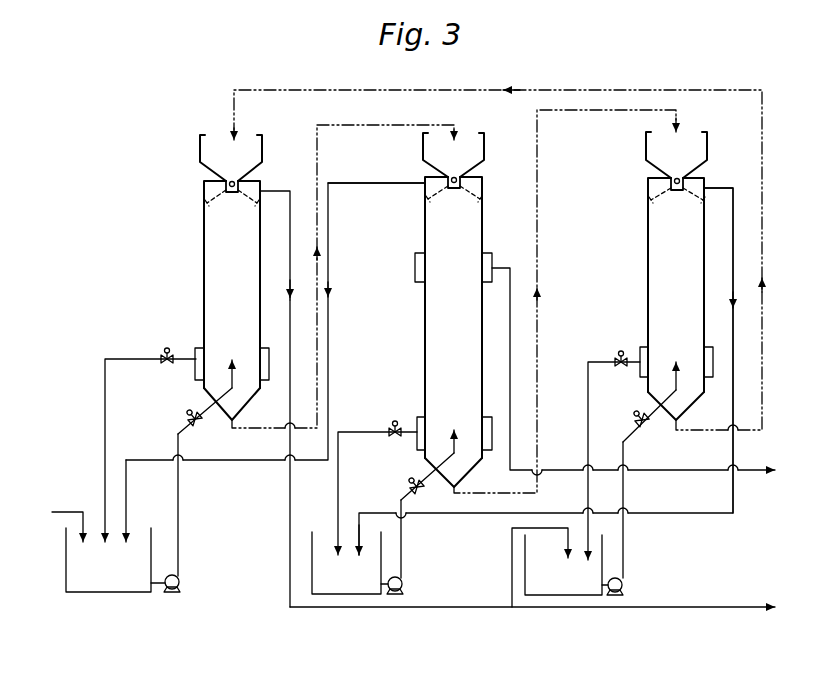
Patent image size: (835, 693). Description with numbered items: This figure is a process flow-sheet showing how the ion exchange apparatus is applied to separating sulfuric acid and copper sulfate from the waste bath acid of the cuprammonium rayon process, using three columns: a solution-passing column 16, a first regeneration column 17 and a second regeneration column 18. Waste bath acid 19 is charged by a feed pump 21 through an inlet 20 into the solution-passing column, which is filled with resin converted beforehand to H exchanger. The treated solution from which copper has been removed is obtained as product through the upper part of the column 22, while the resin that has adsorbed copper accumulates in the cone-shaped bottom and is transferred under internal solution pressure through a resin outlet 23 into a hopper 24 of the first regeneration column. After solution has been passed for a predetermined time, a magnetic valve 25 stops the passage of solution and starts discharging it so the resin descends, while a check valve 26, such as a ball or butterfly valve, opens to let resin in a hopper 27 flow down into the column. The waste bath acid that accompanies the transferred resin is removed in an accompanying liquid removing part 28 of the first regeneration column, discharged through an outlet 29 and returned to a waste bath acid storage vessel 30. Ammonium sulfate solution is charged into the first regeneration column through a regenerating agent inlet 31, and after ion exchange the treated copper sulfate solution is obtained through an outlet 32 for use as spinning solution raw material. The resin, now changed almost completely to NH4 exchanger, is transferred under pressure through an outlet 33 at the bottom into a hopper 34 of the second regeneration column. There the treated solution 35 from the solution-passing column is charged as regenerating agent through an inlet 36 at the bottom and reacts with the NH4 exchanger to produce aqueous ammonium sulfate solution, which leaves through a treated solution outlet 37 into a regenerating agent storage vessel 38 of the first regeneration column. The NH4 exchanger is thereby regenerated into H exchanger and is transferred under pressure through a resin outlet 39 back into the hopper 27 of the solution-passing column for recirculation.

The solution-passing column 16 is at (204, 264).
The first regeneration column 17 is at (425, 297).
The second regeneration column 18 is at (648, 249).
The waste bath acid 19 is at (55, 522).
The inlet 20 is at (235, 359).
The feed pump 21 is at (180, 584).
The upper part of the column 22 is at (262, 190).
The resin outlet 23 is at (236, 421).
The hopper 24 is at (484, 142).
The magnetic valve 25 is at (190, 412).
The check valve 26 is at (222, 189).
The hopper 27 is at (200, 152).
The accompanying liquid removing part 28 is at (463, 221).
The outlet 29 is at (424, 181).
The waste bath acid storage vessel 30 is at (116, 581).
The regenerating agent inlet 31 is at (457, 427).
The outlet 32 is at (494, 267).
The outlet 33 is at (458, 491).
The hopper 34 is at (646, 153).
The treated solution 35 is at (579, 583).
The inlet 36 is at (677, 362).
The treated solution outlet 37 is at (707, 187).
The regenerating agent storage vessel 38 is at (356, 583).
The resin outlet 39 is at (680, 423).